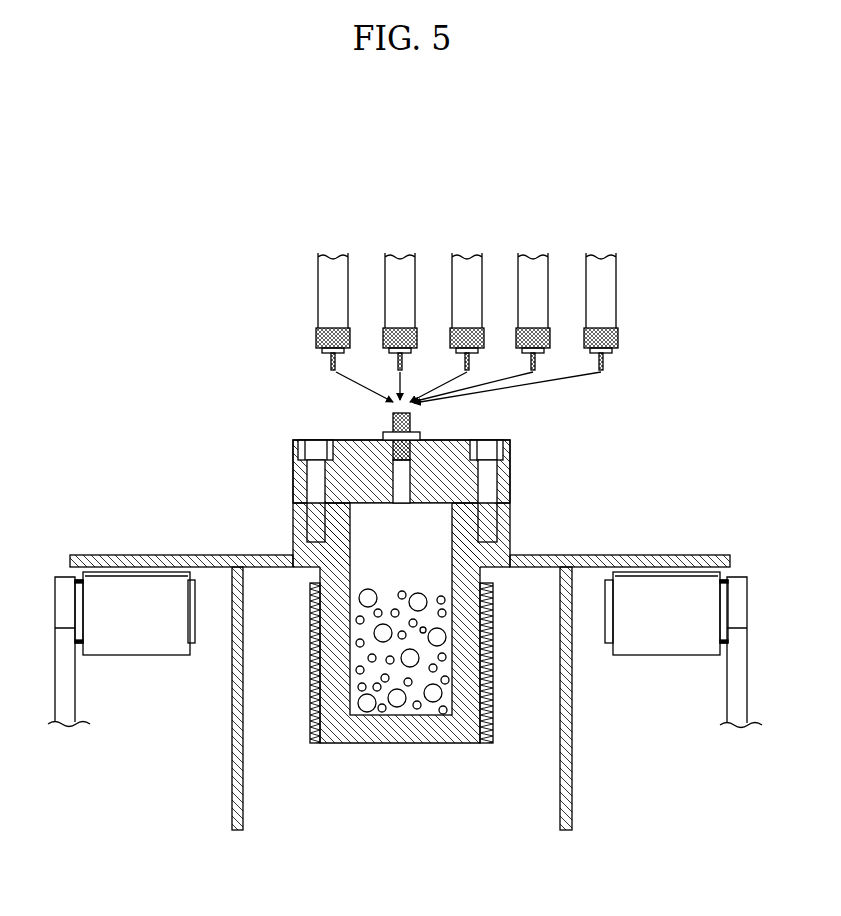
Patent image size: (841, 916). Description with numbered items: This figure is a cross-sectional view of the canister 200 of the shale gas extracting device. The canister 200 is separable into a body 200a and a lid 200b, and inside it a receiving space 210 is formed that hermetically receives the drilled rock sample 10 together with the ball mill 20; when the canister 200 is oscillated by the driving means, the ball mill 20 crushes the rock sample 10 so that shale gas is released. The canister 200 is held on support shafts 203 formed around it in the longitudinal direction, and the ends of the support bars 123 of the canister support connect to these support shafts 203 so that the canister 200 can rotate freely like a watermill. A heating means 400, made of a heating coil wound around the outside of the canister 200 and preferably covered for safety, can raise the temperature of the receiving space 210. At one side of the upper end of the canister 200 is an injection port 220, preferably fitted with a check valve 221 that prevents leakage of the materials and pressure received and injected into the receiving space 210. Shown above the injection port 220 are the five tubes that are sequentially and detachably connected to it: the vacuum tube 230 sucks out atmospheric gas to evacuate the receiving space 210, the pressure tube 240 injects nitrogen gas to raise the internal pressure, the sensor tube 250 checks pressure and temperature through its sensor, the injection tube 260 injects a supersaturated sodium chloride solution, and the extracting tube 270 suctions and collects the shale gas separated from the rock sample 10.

The rock sample 10 is at (363, 708).
The ball mill 20 is at (395, 712).
The support bar 123 is at (67, 680).
The canister 200 is at (471, 503).
The body 200a is at (512, 518).
The lid 200b is at (512, 472).
The support shaft 203 is at (122, 593).
The receiving space 210 is at (377, 513).
The injection port 220 is at (398, 468).
The check valve 221 is at (393, 422).
The vacuum tube 230 is at (332, 282).
The pressure tube 240 is at (398, 278).
The sensor tube 250 is at (462, 278).
The injection tube 260 is at (528, 278).
The extracting tube 270 is at (607, 280).
The heating means 400 is at (497, 718).